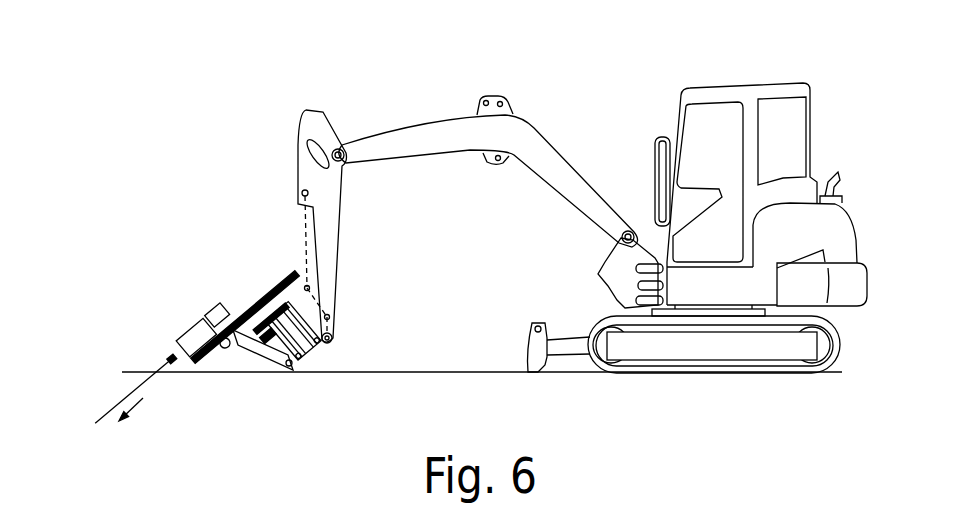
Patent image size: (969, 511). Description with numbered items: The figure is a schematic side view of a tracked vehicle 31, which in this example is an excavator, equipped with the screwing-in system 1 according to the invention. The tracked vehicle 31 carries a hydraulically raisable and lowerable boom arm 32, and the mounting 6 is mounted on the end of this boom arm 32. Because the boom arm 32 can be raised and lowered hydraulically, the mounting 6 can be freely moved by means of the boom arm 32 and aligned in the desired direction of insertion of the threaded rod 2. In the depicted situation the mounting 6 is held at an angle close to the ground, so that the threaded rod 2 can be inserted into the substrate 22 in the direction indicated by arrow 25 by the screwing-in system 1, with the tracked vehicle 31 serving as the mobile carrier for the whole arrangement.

The screwing-in system 1 is at (188, 328).
The threaded rod 2 is at (118, 401).
The mounting 6 is at (268, 300).
The substrate 22 is at (482, 406).
The arrow 25 is at (140, 402).
The tracked vehicle 31 is at (582, 201).
The boom arm 32 is at (418, 137).